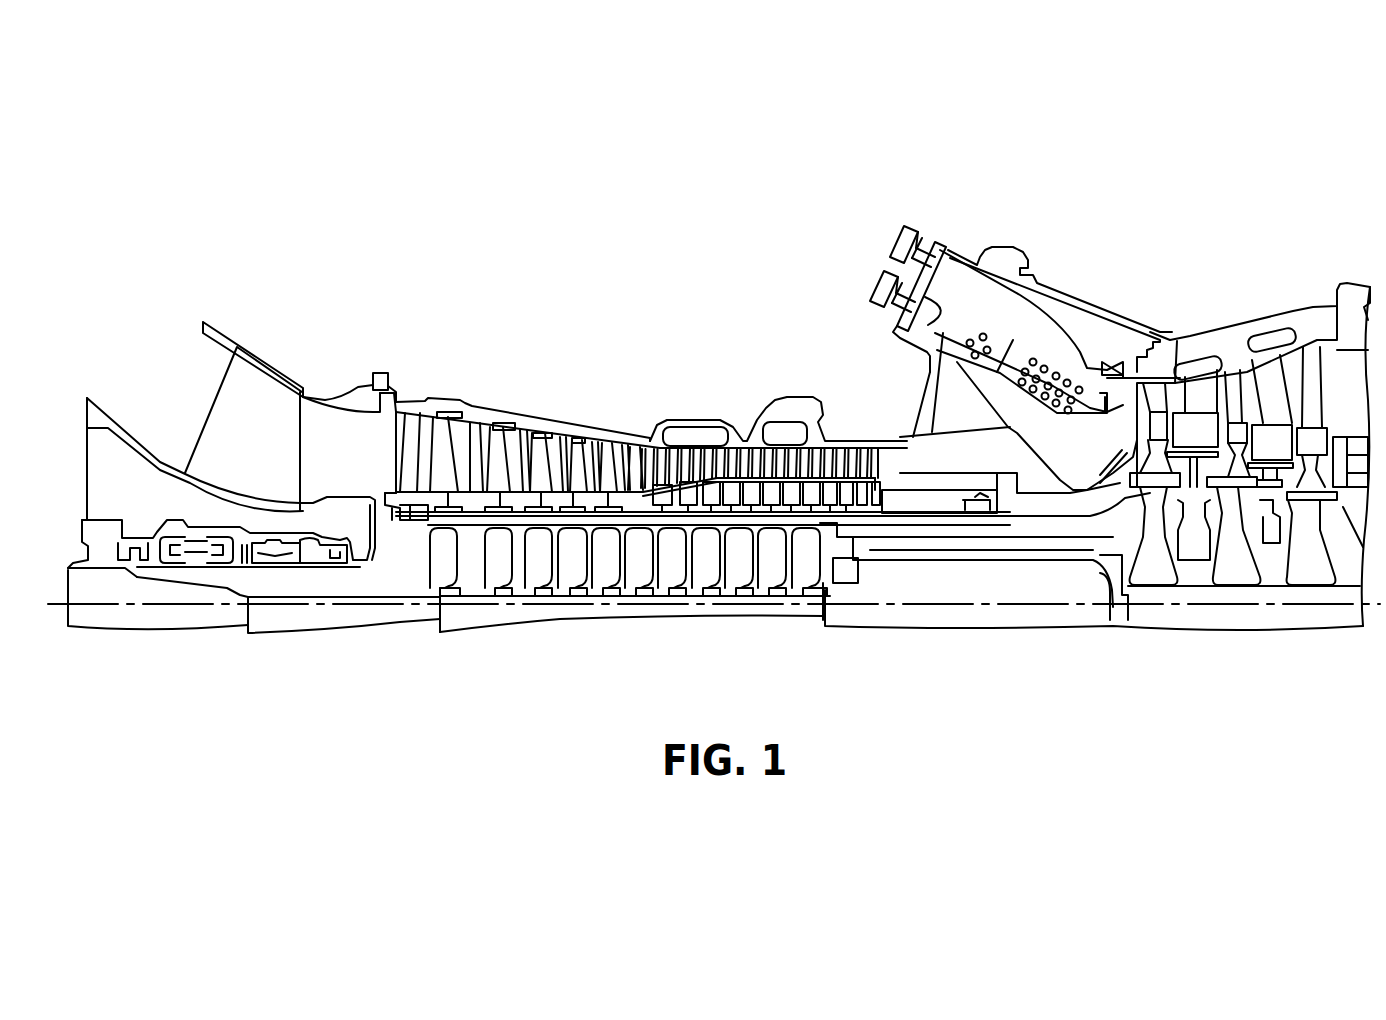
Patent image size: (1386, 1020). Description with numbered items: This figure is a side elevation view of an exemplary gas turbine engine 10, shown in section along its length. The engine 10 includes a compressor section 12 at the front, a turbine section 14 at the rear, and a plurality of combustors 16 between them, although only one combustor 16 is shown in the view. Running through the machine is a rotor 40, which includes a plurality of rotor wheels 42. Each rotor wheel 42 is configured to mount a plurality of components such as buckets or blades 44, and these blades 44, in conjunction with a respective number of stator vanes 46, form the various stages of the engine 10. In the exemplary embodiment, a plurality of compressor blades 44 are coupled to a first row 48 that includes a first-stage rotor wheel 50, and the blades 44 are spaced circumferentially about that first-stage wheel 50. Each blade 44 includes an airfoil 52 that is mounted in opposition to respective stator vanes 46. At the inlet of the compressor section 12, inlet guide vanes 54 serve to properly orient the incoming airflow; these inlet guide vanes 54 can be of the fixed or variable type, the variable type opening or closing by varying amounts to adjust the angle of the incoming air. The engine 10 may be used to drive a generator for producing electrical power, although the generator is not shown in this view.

The gas turbine engine 10 is at (345, 165).
The compressor section 12 is at (603, 333).
The turbine section 14 is at (1222, 278).
The combustor 16 is at (830, 210).
The rotor 40 is at (992, 523).
The rotor wheel 42 is at (473, 578).
The blade 44 is at (530, 455).
The stator vane 46 is at (504, 458).
The first row 48 is at (425, 405).
The first-stage rotor wheel 50 is at (418, 503).
The airfoil 52 is at (422, 458).
The inlet guide vane 54 is at (388, 436).